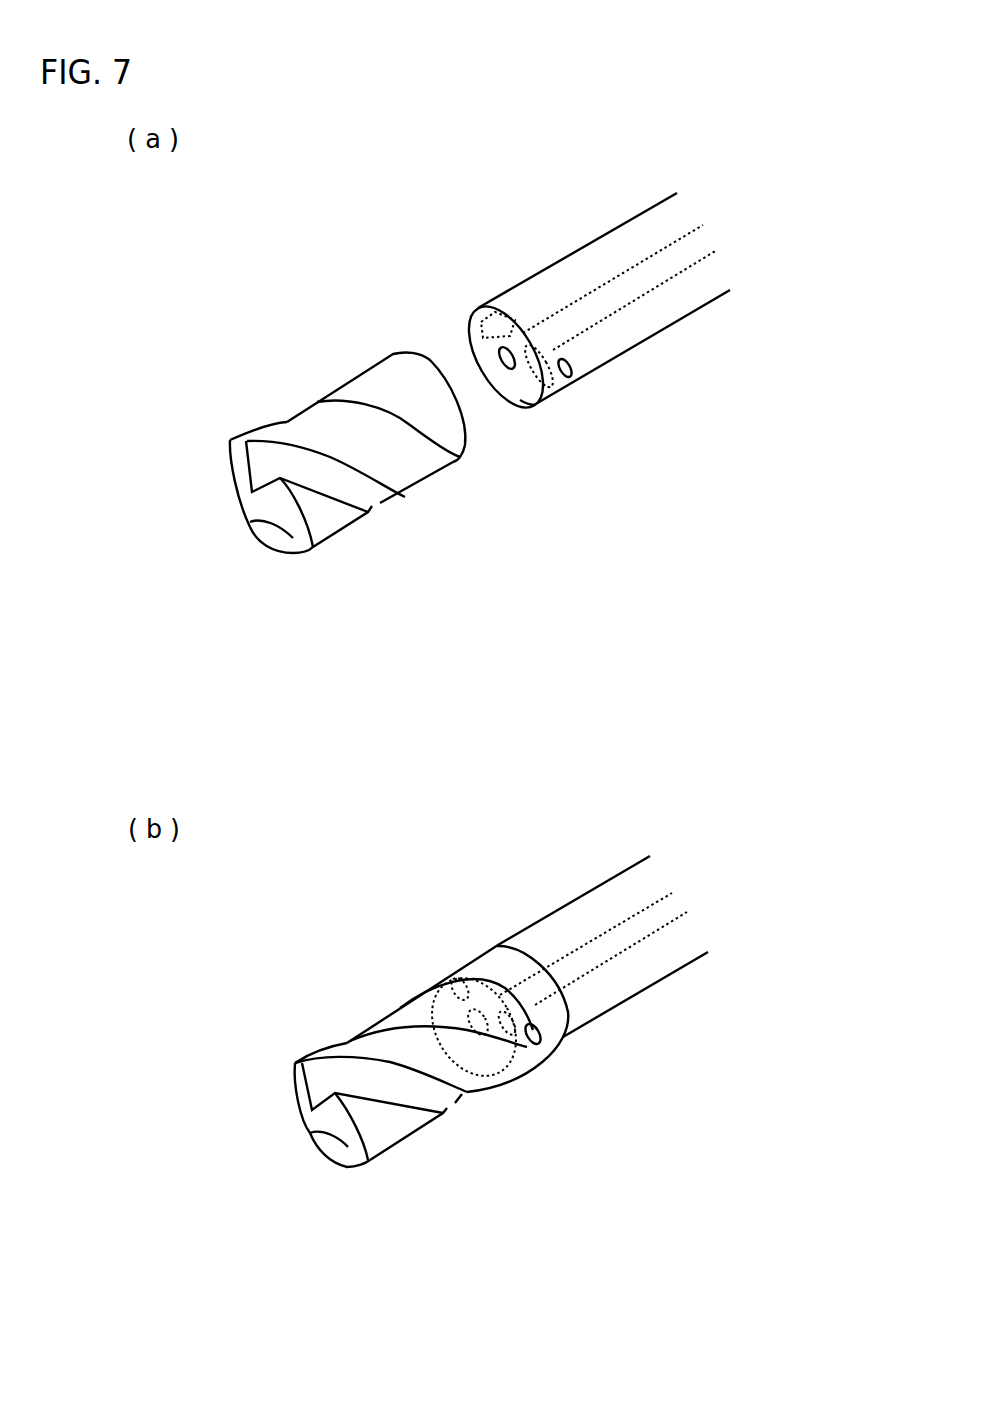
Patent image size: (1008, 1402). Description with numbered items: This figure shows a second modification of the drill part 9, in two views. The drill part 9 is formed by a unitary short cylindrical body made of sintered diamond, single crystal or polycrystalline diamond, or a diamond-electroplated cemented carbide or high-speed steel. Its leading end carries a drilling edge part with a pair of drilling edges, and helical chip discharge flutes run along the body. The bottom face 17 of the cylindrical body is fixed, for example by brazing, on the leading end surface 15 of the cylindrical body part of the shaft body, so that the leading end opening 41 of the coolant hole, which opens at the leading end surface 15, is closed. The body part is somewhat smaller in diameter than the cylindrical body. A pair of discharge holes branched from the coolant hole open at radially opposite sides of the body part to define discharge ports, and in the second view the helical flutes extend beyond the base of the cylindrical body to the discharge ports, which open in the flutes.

The drill part 9 is at (300, 350).
The leading end surface 15 is at (476, 348).
The bottom face 17 is at (427, 356).
The leading end opening 41 is at (545, 398).